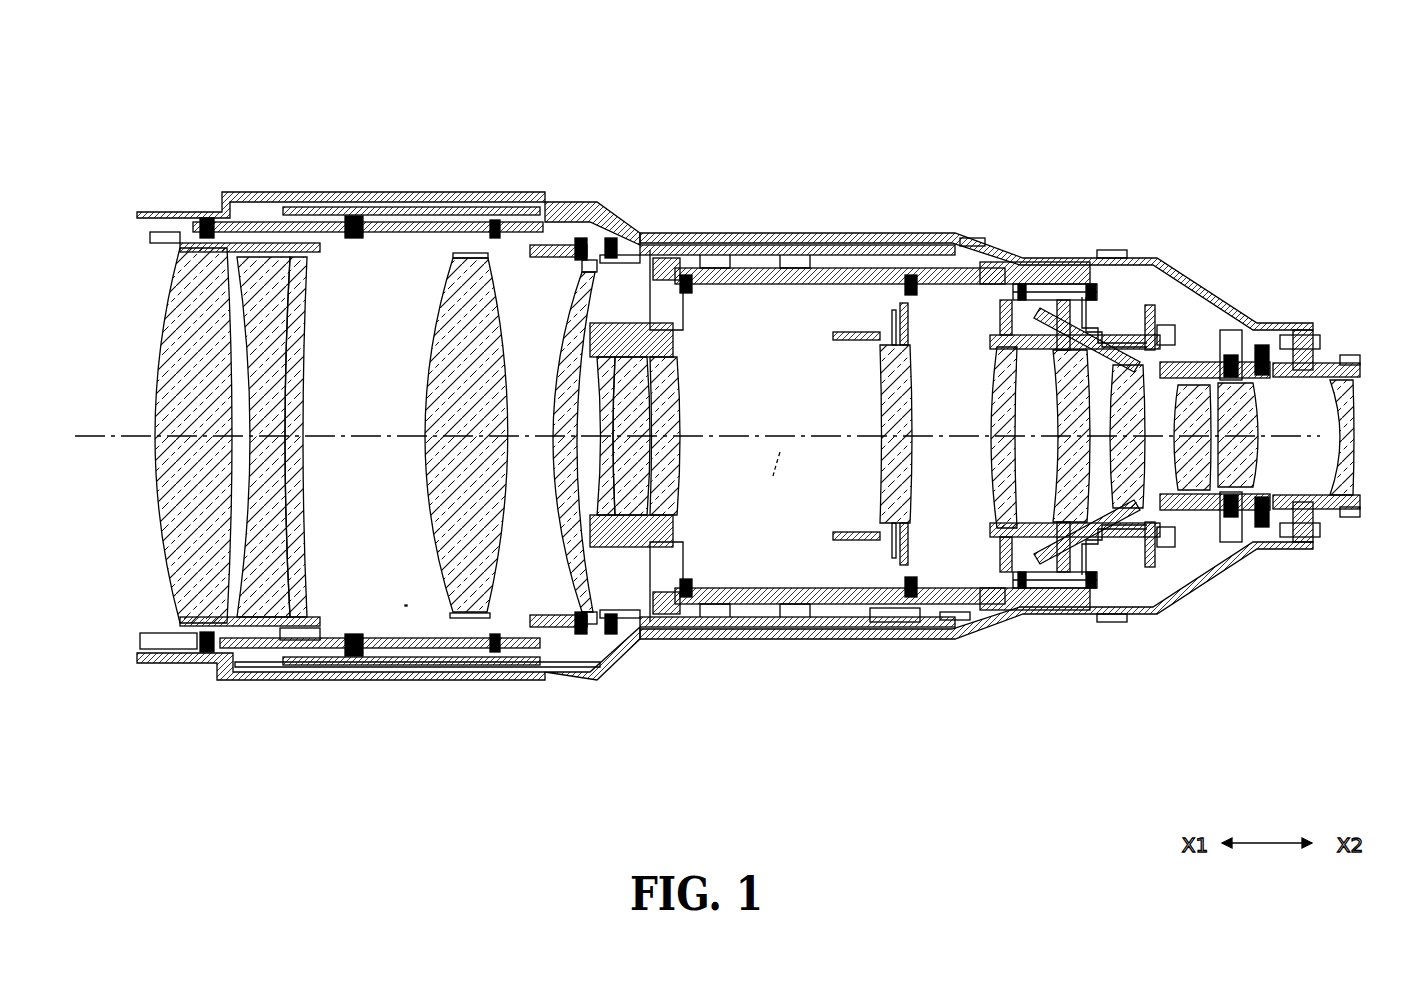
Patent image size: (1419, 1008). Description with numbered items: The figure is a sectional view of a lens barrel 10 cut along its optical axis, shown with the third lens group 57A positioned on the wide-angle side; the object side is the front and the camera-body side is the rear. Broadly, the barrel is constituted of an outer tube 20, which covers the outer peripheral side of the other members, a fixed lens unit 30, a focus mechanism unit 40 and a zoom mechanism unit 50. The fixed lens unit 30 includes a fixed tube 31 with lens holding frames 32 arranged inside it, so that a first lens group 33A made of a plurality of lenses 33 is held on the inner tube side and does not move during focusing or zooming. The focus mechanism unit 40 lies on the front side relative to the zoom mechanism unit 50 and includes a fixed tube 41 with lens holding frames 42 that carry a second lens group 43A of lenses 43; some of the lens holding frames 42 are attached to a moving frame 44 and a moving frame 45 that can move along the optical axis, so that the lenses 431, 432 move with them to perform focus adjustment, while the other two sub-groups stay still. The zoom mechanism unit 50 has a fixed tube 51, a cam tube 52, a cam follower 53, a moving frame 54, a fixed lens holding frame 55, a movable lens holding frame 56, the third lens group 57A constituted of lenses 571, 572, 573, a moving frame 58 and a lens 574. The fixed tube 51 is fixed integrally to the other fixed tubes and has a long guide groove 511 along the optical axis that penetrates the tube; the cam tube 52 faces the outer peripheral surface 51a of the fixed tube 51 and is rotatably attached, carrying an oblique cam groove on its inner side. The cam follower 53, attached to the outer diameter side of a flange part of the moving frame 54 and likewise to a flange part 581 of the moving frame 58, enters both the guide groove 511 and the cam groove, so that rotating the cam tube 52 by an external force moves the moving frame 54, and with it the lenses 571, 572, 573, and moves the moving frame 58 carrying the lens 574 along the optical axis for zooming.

The lens barrel 10 is at (760, 108).
The outer tube 20 is at (885, 233).
The fixed lens unit 30 is at (1191, 472).
The fixed tube 31 is at (1200, 548).
The lens holding frame 32 is at (1243, 365).
The lens 33 is at (1010, 412).
The first lens group 33A is at (1100, 545).
The focus mechanism unit 40 is at (372, 447).
The fixed tube 41 is at (283, 662).
The lens holding frame 42 is at (205, 218).
The lens 43 is at (165, 355).
The lens 431 is at (308, 358).
The lens 432 is at (577, 542).
The second lens group 43A is at (410, 605).
The moving frame 44 is at (310, 212).
The moving frame 45 is at (556, 212).
The zoom mechanism unit 50 is at (912, 430).
The fixed tube 51 is at (688, 604).
The outer peripheral surface 51a is at (965, 610).
The guide groove 511 is at (775, 290).
The cam tube 52 is at (757, 255).
The cam follower 53 is at (652, 280).
The moving frame 54 is at (597, 235).
The fixed lens holding frame 55 is at (650, 640).
The movable lens holding frame 56 is at (612, 645).
The third lens group 57A is at (697, 495).
The lens 571 is at (680, 396).
The lens 572 is at (623, 383).
The lens 573 is at (605, 413).
The lens 574 is at (880, 385).
The moving frame 58 is at (900, 604).
The flange part 581 is at (973, 258).